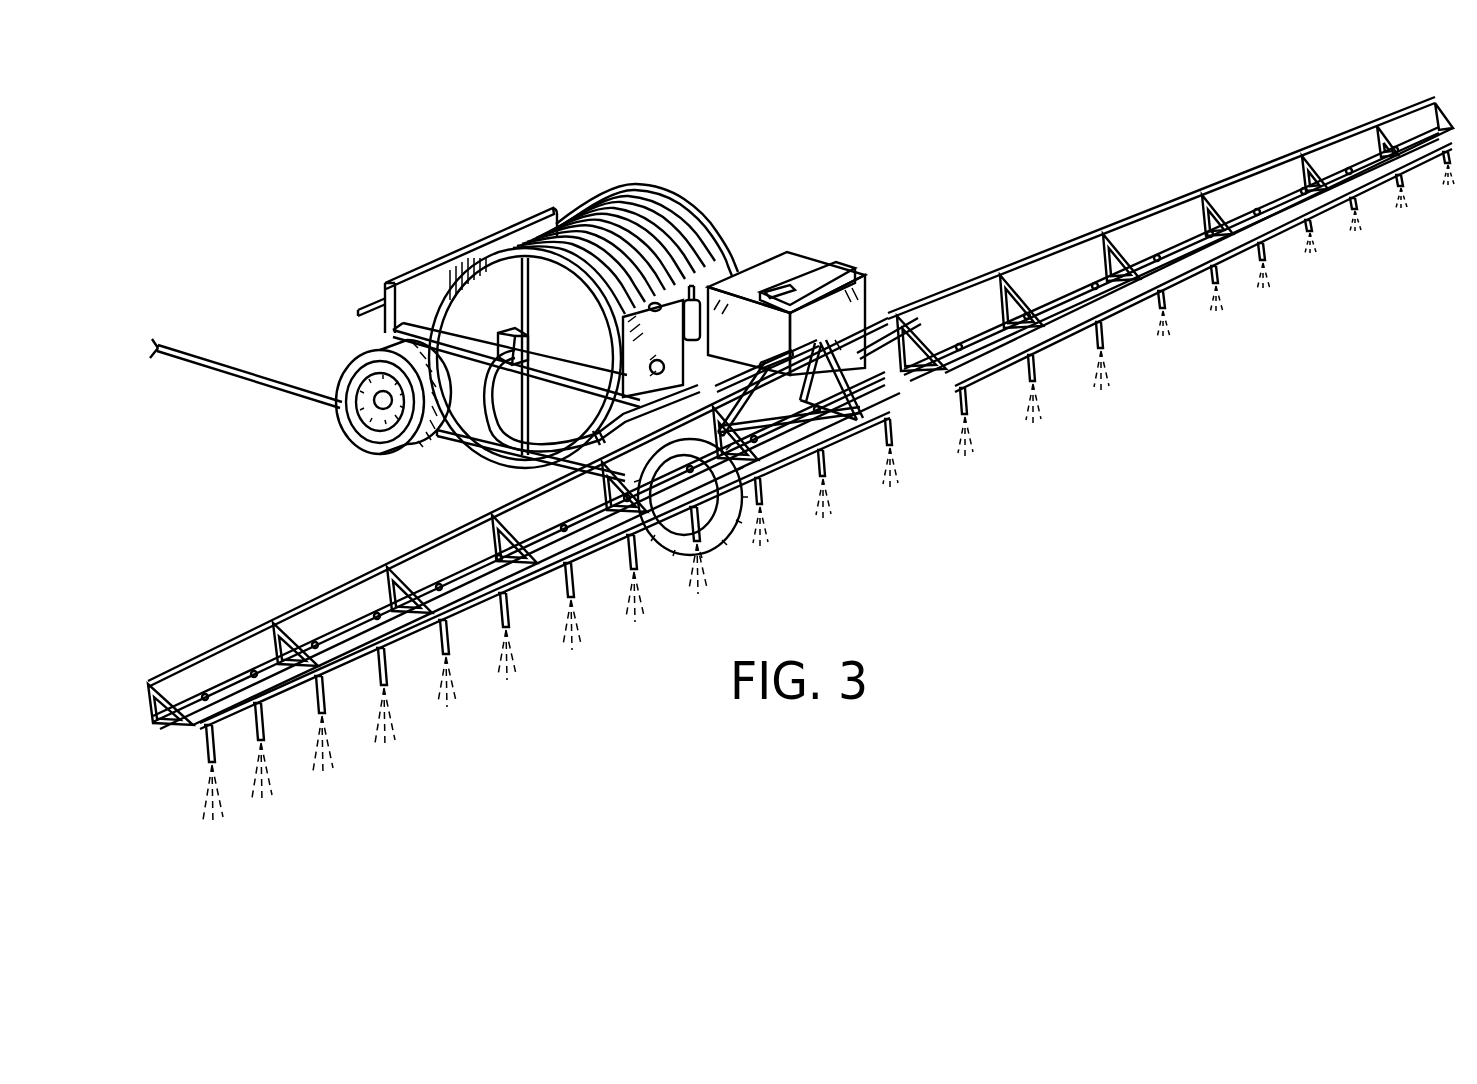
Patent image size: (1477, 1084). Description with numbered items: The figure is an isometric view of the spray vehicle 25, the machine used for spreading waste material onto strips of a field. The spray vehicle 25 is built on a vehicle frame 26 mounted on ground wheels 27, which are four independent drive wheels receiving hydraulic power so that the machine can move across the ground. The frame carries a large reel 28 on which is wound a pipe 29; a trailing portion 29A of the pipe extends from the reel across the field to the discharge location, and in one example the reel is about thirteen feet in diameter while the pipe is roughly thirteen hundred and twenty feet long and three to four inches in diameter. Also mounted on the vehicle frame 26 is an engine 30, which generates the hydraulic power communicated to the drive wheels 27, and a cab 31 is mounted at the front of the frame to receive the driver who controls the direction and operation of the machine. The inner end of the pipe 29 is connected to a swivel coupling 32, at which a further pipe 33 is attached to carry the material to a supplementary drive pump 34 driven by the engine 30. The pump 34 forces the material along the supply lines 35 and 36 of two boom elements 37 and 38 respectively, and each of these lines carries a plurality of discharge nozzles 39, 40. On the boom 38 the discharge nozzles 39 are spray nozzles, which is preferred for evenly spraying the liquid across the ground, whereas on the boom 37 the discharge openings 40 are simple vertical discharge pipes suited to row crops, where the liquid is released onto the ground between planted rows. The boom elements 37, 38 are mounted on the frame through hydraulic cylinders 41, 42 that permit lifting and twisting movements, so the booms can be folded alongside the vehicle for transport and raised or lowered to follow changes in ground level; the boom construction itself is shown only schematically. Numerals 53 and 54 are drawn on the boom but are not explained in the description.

The spray vehicle 25 is at (801, 461).
The vehicle frame 26 is at (522, 208).
The ground wheels 27 is at (366, 433).
The reel 28 is at (657, 194).
The pipe 29 is at (667, 246).
The trailing portion 29A is at (190, 356).
The engine 30 is at (741, 264).
The cab 31 is at (852, 277).
The swivel coupling 32 is at (530, 417).
The pipe 33 is at (512, 335).
The supplementary drive pump 34 is at (675, 373).
The supply line 35 is at (598, 547).
The supply line 36 is at (987, 368).
The boom element 37 is at (524, 571).
The boom element 38 is at (1171, 277).
The discharge nozzles 39 is at (1043, 355).
The discharge openings 40 is at (565, 597).
The hydraulic cylinder 41 is at (757, 428).
The hydraulic cylinder 42 is at (878, 313).
The boom rail 53 is at (357, 615).
The pipe hanger 54 is at (342, 647).